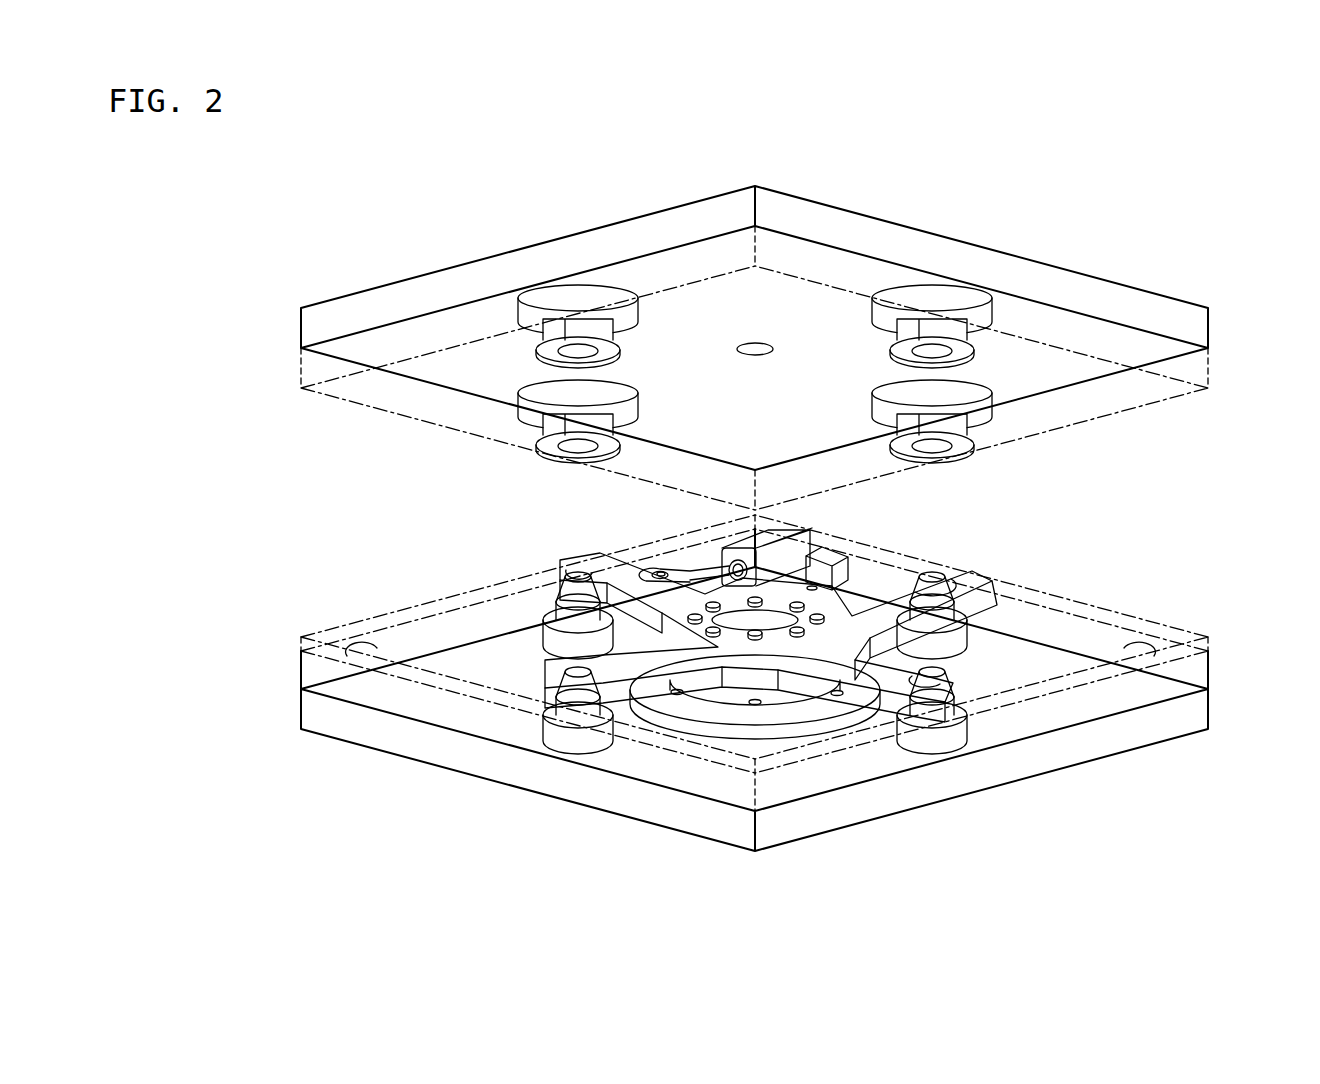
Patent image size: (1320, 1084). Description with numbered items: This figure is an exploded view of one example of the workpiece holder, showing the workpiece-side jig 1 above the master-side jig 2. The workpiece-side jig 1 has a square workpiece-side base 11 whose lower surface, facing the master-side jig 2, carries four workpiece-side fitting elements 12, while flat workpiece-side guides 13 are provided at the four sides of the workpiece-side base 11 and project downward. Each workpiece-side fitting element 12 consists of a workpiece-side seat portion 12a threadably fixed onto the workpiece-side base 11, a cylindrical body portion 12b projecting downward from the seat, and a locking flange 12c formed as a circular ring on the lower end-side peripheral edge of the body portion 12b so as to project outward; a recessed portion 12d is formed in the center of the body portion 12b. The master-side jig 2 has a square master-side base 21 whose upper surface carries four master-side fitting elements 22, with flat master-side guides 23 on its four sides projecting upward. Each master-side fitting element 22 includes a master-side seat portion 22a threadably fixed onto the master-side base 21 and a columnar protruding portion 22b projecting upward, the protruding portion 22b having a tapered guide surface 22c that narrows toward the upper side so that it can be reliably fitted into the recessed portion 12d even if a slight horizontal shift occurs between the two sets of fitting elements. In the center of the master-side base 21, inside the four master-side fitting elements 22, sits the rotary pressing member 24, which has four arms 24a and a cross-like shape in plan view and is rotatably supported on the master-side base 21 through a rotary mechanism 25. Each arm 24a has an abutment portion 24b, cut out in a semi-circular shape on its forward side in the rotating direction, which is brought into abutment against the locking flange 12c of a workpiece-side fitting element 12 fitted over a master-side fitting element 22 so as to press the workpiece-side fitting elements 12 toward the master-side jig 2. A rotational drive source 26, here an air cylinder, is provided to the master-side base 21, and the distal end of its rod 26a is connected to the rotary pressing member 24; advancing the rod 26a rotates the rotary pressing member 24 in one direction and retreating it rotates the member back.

The workpiece-side jig 1 is at (1237, 167).
The master-side jig 2 is at (1237, 520).
The workpiece-side base 11 is at (370, 300).
The workpiece-side fitting element 12 is at (745, 326).
The workpiece-side seat portion 12a is at (605, 295).
The body portion 12b is at (578, 325).
The locking flange 12c is at (556, 340).
The recessed portion 12d is at (560, 355).
The workpiece-side guide 13 is at (330, 396).
The master-side base 21 is at (333, 720).
The master-side fitting element 22 is at (705, 709).
The master-side seat portion 22a is at (548, 628).
The protruding portion 22b is at (558, 606).
The tapered guide surface 22c is at (568, 583).
The master-side guide 23 is at (352, 637).
The rotary pressing member 24 is at (527, 690).
The arm 24a is at (640, 578).
The abutment portion 24b is at (572, 560).
The rotary mechanism 25 is at (730, 715).
The rotational drive source 26 is at (803, 550).
The rod 26a is at (662, 570).